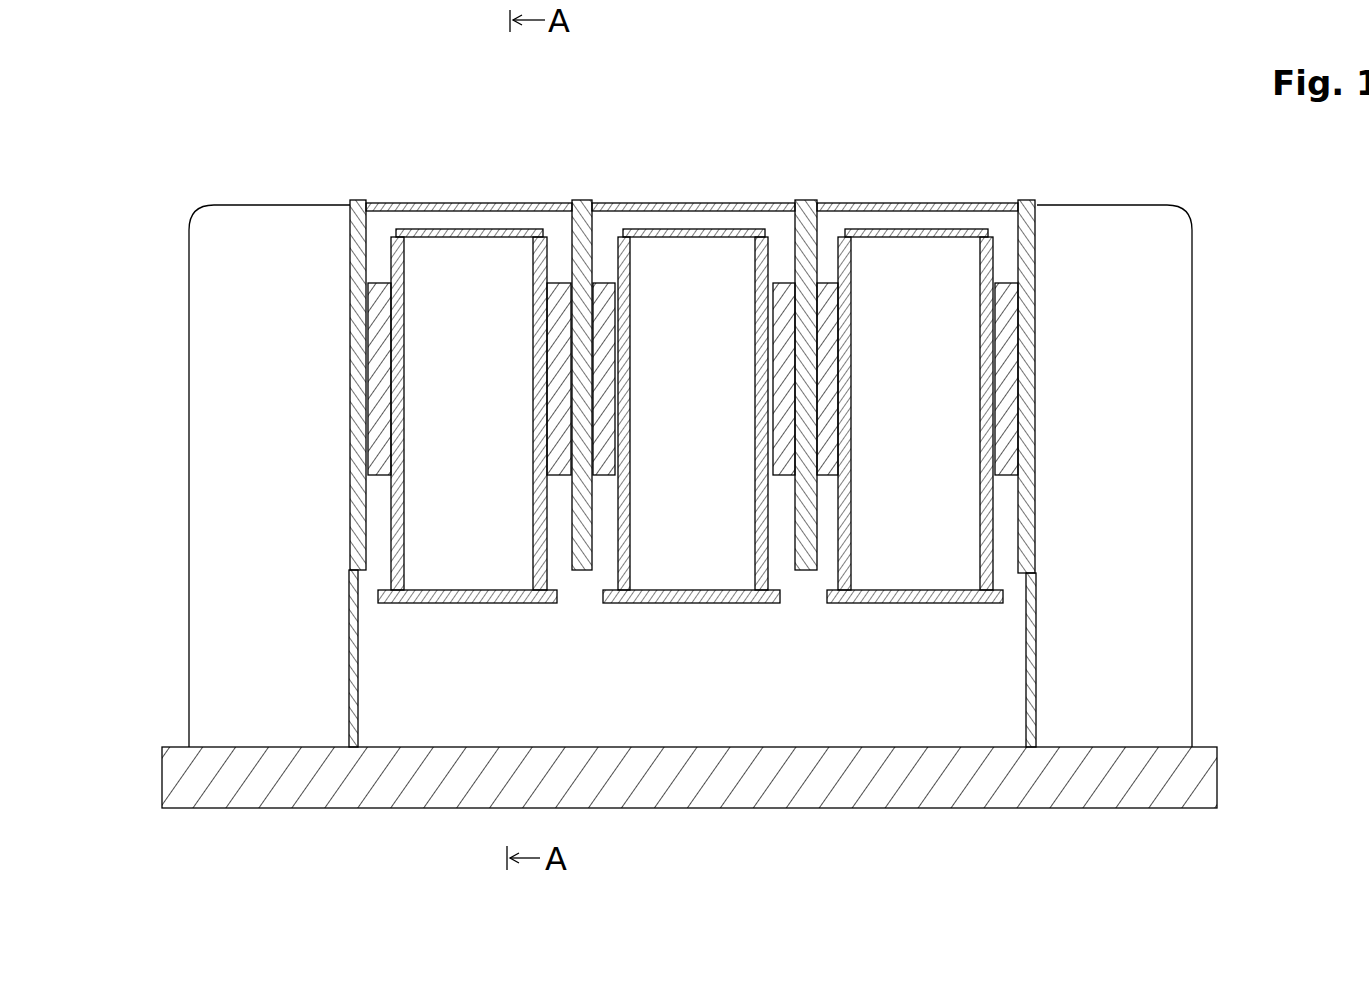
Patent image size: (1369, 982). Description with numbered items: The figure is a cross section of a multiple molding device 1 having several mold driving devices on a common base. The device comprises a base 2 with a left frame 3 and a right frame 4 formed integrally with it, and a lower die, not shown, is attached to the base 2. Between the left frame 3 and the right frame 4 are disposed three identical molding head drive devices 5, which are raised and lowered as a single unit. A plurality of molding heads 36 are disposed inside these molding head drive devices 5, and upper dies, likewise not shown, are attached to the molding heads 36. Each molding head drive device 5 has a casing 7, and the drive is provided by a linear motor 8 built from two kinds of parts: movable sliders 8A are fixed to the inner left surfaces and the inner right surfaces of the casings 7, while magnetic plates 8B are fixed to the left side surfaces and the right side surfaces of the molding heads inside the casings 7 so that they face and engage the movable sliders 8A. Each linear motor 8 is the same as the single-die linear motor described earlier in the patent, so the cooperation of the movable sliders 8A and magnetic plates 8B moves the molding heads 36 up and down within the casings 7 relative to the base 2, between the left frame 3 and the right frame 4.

The multiple molding device 1 is at (688, 456).
The base 2 is at (202, 805).
The left frame 3 is at (188, 535).
The right frame 4 is at (1192, 510).
The molding head drive device 5 is at (692, 358).
The casing 7 is at (467, 222).
The linear motor 8 is at (676, 411).
The movable slider 8A is at (352, 290).
The magnetic plate 8B is at (392, 250).
The molding head 36 is at (436, 603).